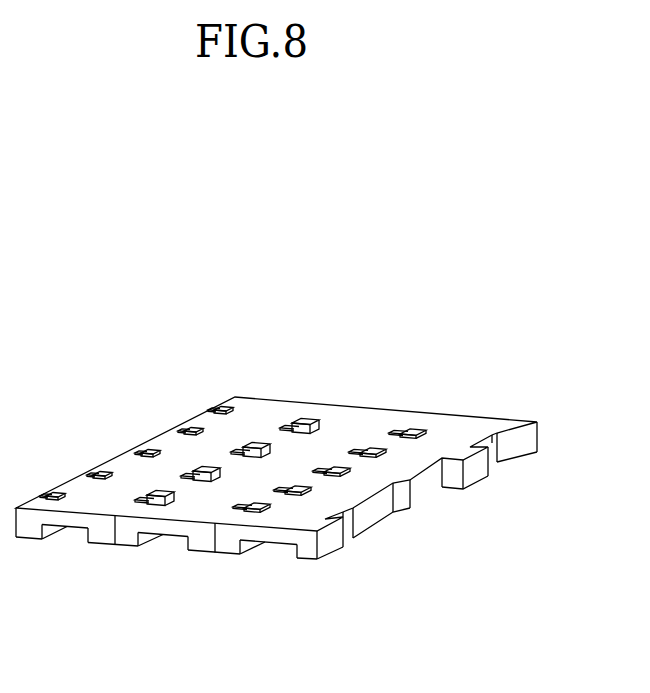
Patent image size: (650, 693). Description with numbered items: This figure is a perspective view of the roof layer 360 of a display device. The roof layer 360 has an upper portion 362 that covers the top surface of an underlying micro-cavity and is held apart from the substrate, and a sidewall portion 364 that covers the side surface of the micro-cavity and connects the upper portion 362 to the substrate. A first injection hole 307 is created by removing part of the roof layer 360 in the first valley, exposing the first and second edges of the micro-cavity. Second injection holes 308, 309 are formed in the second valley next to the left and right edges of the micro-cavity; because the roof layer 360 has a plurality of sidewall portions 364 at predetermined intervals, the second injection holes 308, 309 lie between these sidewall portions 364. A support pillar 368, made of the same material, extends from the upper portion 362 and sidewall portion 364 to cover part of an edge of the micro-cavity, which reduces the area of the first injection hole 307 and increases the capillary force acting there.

The roof layer 360 is at (267, 324).
The second injection hole 308 is at (185, 477).
The second injection hole 309 is at (356, 451).
The first injection hole 307 is at (165, 538).
The upper portion 362 is at (184, 534).
The sidewall portion 364 is at (222, 548).
The support pillar 368 is at (234, 548).